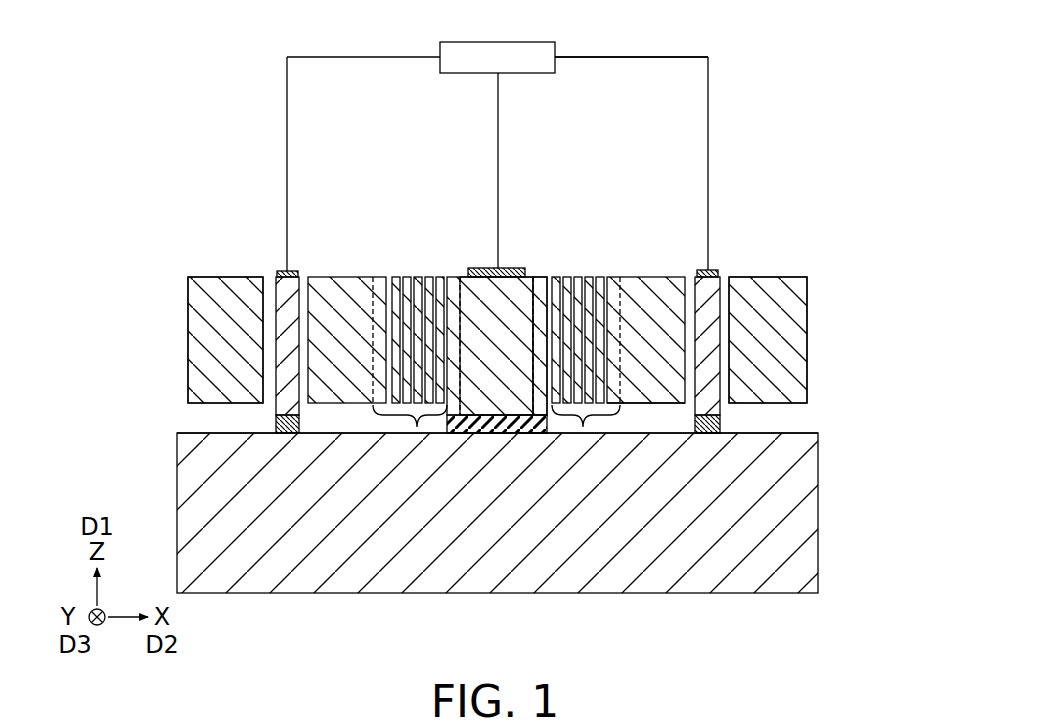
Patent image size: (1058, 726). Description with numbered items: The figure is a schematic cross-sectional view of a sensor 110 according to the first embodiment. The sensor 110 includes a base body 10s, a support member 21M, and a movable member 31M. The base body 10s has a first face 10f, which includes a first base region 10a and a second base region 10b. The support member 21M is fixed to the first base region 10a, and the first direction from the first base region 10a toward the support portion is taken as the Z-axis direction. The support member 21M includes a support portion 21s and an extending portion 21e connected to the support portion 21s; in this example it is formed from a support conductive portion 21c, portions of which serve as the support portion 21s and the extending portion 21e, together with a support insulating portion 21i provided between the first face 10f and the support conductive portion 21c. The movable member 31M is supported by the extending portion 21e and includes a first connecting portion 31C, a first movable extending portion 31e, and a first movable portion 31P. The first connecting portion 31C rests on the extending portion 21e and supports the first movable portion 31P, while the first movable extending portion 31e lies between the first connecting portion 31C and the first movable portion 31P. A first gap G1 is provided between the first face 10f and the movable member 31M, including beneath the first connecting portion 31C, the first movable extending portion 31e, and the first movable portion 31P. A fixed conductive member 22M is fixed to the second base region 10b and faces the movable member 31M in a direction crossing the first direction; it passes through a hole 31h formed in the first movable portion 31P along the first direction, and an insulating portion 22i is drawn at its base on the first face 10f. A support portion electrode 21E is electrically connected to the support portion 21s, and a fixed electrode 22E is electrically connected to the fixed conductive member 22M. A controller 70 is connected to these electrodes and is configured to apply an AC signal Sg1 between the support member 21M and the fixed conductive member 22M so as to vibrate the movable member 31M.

The sensor 110 is at (818, 128).
The controller 70 is at (557, 50).
The AC signal Sg1 is at (665, 57).
The base body 10s is at (797, 510).
The first face 10f is at (793, 433).
The first base region 10a is at (500, 435).
The second base region 10b is at (707, 435).
The movable member 31M is at (247, 238).
The first movable portion 31P is at (210, 292).
The first connecting portion 31C is at (416, 430).
The first movable extending portion 31e is at (613, 277).
The hole 31h is at (735, 338).
The support member 21M is at (505, 170).
The support portion 21s is at (523, 275).
The extending portion 21e is at (543, 277).
The support conductive portion 21c is at (477, 310).
The support insulating portion 21i is at (467, 430).
The support portion electrode 21E is at (478, 268).
The fixed conductive member 22M is at (290, 316).
The second insulating portion 22i is at (290, 428).
The fixed electrode 22E is at (280, 271).
The first gap G1 is at (650, 412).